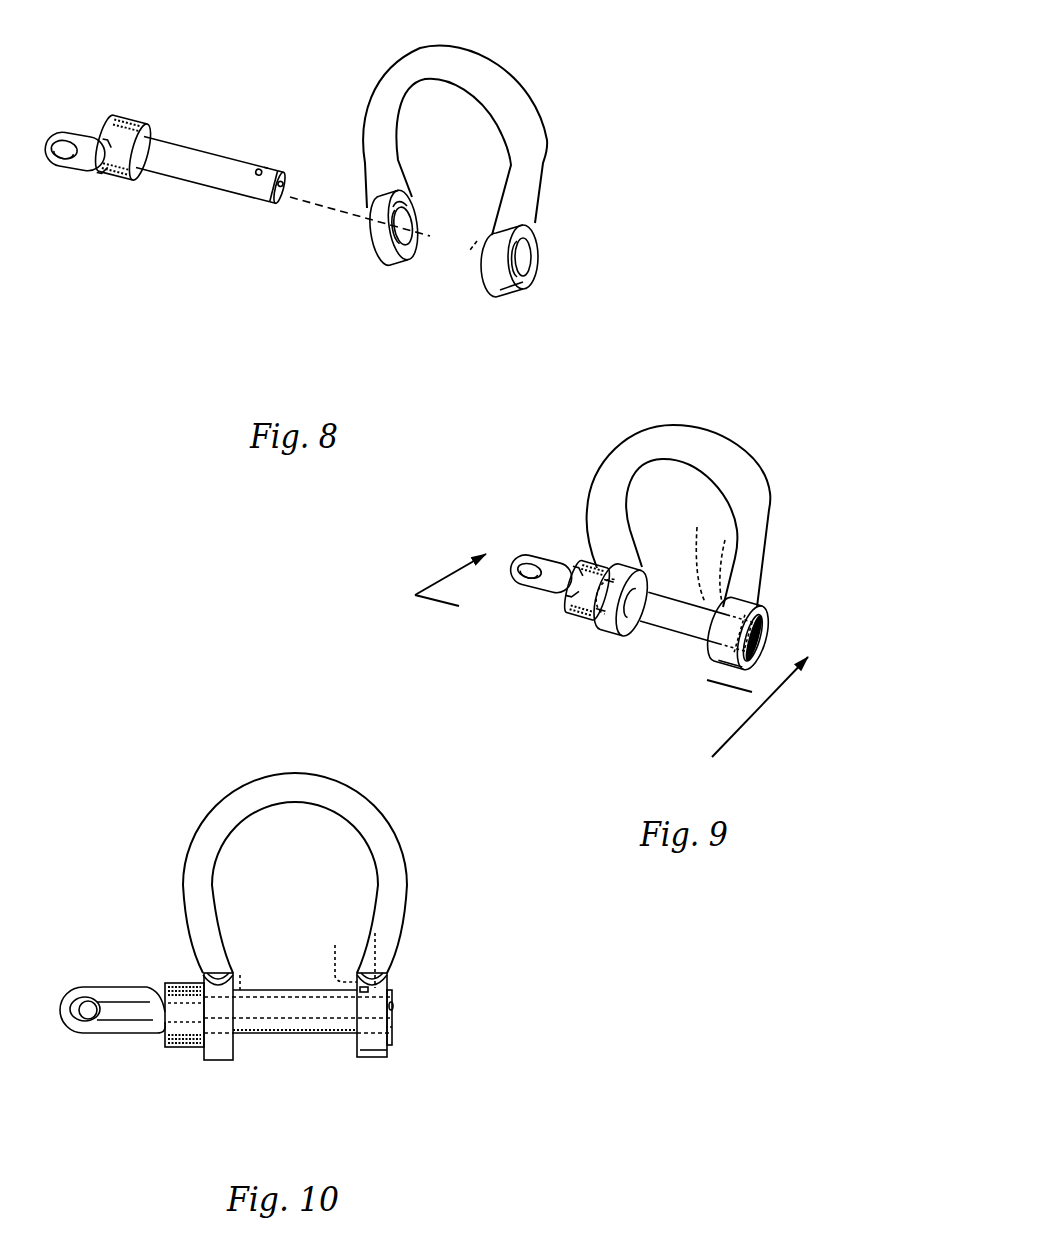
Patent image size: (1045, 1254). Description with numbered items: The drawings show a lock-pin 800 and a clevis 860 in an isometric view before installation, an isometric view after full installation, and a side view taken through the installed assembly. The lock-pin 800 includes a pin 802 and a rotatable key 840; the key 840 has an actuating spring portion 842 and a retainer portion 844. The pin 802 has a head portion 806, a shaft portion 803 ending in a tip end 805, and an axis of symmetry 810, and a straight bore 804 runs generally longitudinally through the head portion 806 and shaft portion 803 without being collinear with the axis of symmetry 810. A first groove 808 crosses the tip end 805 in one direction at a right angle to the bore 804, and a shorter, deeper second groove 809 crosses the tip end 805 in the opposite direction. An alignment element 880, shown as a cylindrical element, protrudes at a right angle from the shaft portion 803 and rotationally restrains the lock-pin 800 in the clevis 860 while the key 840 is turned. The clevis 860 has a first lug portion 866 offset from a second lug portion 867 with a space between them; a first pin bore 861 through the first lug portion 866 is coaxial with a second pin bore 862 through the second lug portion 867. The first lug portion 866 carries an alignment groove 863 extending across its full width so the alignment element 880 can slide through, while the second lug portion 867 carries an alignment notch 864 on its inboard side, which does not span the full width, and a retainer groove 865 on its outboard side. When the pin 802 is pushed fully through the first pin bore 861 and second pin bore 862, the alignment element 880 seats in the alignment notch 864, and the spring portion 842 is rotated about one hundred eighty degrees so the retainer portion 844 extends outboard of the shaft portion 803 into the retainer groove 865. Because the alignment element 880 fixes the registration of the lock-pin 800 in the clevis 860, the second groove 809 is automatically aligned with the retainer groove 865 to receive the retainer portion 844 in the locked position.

In FIG. 8, the lock-pin 800 is at (118, 275).
In FIG. 9, the lock-pin 800 is at (560, 647).
In FIG. 10, the lock-pin 800 is at (240, 1068).
In FIG. 8, the pin 802 is at (177, 120).
In FIG. 9, the pin 802 is at (668, 576).
In FIG. 8, the shaft portion 803 is at (207, 190).
In FIG. 9, the shaft portion 803 is at (684, 648).
In FIG. 10, the shaft portion 803 is at (297, 1040).
In FIG. 10, the straight bore 804 is at (327, 1040).
In FIG. 8, the tip end 805 is at (260, 174).
In FIG. 10, the tip end 805 is at (393, 1008).
In FIG. 8, the head portion 806 is at (120, 175).
In FIG. 10, the head portion 806 is at (168, 982).
In FIG. 8, the first groove 808 is at (284, 184).
In FIG. 10, the first groove 808 is at (389, 992).
In FIG. 8, the second groove 809 is at (290, 214).
In FIG. 9, the second groove 809 is at (755, 683).
In FIG. 10, the second groove 809 is at (388, 1027).
In FIG. 8, the axis of symmetry 810 is at (318, 200).
In FIG. 8, the rotatable key 840 is at (90, 176).
In FIG. 9, the rotatable key 840 is at (516, 599).
In FIG. 8, the spring portion 842 is at (85, 131).
In FIG. 9, the spring portion 842 is at (565, 558).
In FIG. 10, the spring portion 842 is at (107, 987).
In FIG. 8, the retainer portion 844 is at (283, 202).
In FIG. 9, the retainer portion 844 is at (764, 660).
In FIG. 10, the retainer portion 844 is at (391, 1055).
In FIG. 8, the clevis 860 is at (535, 80).
In FIG. 9, the clevis 860 is at (728, 430).
In FIG. 10, the clevis 860 is at (353, 778).
In FIG. 8, the first pin bore 861 is at (410, 256).
In FIG. 9, the first pin bore 861 is at (634, 642).
In FIG. 8, the second pin bore 862 is at (529, 262).
In FIG. 9, the second pin bore 862 is at (767, 610).
In FIG. 8, the alignment groove 863 is at (408, 212).
In FIG. 10, the alignment groove 863 is at (240, 990).
In FIG. 8, the alignment notch 864 is at (477, 241).
In FIG. 9, the alignment notch 864 is at (725, 540).
In FIG. 10, the alignment notch 864 is at (335, 945).
In FIG. 8, the retainer groove 865 is at (524, 284).
In FIG. 9, the retainer groove 865 is at (752, 695).
In FIG. 10, the retainer groove 865 is at (388, 1055).
In FIG. 8, the first lug portion 866 is at (366, 242).
In FIG. 9, the first lug portion 866 is at (621, 642).
In FIG. 10, the first lug portion 866 is at (205, 1061).
In FIG. 8, the second lug portion 867 is at (537, 240).
In FIG. 9, the second lug portion 867 is at (778, 670).
In FIG. 10, the second lug portion 867 is at (358, 1060).
In FIG. 8, the alignment element 880 is at (262, 166).
In FIG. 9, the alignment element 880 is at (697, 527).
In FIG. 10, the alignment element 880 is at (375, 933).